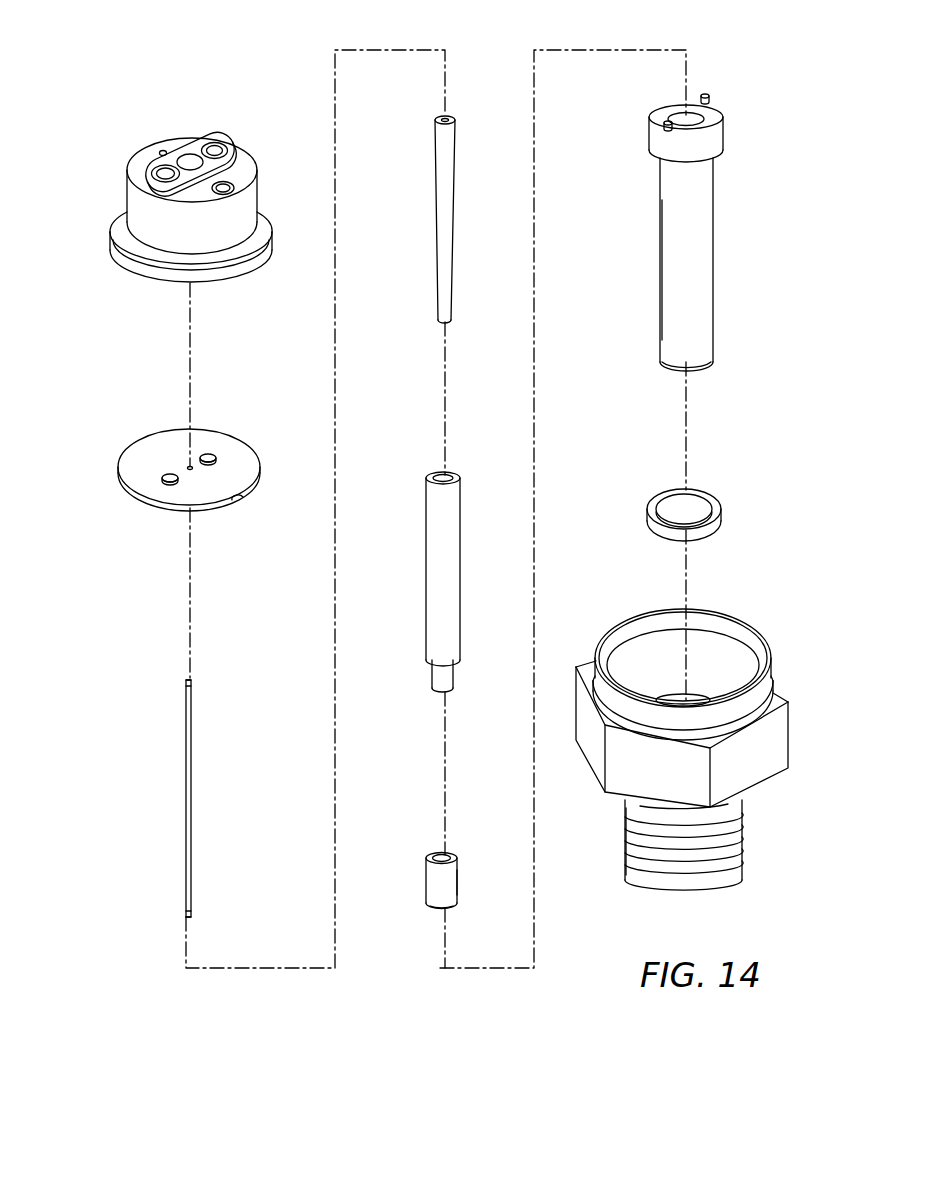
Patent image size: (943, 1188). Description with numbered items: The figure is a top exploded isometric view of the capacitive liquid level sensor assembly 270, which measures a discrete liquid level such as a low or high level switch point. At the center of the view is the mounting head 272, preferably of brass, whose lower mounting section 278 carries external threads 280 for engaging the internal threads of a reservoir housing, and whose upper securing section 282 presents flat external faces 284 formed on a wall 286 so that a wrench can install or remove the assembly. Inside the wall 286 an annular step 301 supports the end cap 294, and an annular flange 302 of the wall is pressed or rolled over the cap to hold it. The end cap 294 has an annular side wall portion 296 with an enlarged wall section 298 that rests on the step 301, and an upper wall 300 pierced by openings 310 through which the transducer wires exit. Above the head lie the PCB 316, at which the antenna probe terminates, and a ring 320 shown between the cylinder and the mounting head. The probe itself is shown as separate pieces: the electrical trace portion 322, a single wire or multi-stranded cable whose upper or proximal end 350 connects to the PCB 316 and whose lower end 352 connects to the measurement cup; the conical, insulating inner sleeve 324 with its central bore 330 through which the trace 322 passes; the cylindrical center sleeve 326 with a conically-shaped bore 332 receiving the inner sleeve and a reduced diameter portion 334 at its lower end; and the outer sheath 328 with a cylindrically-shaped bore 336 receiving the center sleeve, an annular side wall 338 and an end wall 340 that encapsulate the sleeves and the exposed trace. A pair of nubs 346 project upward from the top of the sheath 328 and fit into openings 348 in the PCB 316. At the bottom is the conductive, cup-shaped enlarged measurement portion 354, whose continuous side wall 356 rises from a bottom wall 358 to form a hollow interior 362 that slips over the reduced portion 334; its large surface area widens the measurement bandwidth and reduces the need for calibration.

The capacitive liquid level sensor assembly 270 is at (124, 70).
The mounting head 272 is at (790, 734).
The mounting section 278 is at (742, 845).
The external threads 280 is at (627, 822).
The securing section 282 is at (582, 662).
The external faces 284 is at (762, 775).
The wall 286 is at (720, 673).
The end cap 294 is at (189, 158).
The annular side wall portion 296 is at (143, 220).
The enlarged wall section 298 is at (244, 258).
The upper wall 300 is at (148, 152).
The annular step 301 is at (753, 673).
The annular flange 302 is at (640, 614).
The openings 310 is at (199, 142).
The PCB 316 is at (210, 436).
The ring 320 is at (710, 495).
The electrical trace portion 322 is at (192, 791).
The inner sleeve 324 is at (447, 213).
The center sleeve 326 is at (451, 545).
The outer sheath 328 is at (715, 210).
The central bore 330 is at (446, 116).
The conically-shaped bore 332 is at (440, 474).
The reduced diameter portion 334 is at (449, 676).
The cylindrically-shaped bore 336 is at (678, 112).
The annular side wall 338 is at (702, 285).
The end wall 340 is at (666, 360).
The nubs 346 is at (709, 97).
The openings 348 is at (170, 472).
The upper or proximal end 350 is at (186, 684).
The lower end 352 is at (186, 908).
The enlarged measurement portion 354 is at (426, 887).
The continuous side wall 356 is at (451, 882).
The bottom wall 358 is at (436, 912).
The hollow interior 362 is at (443, 855).